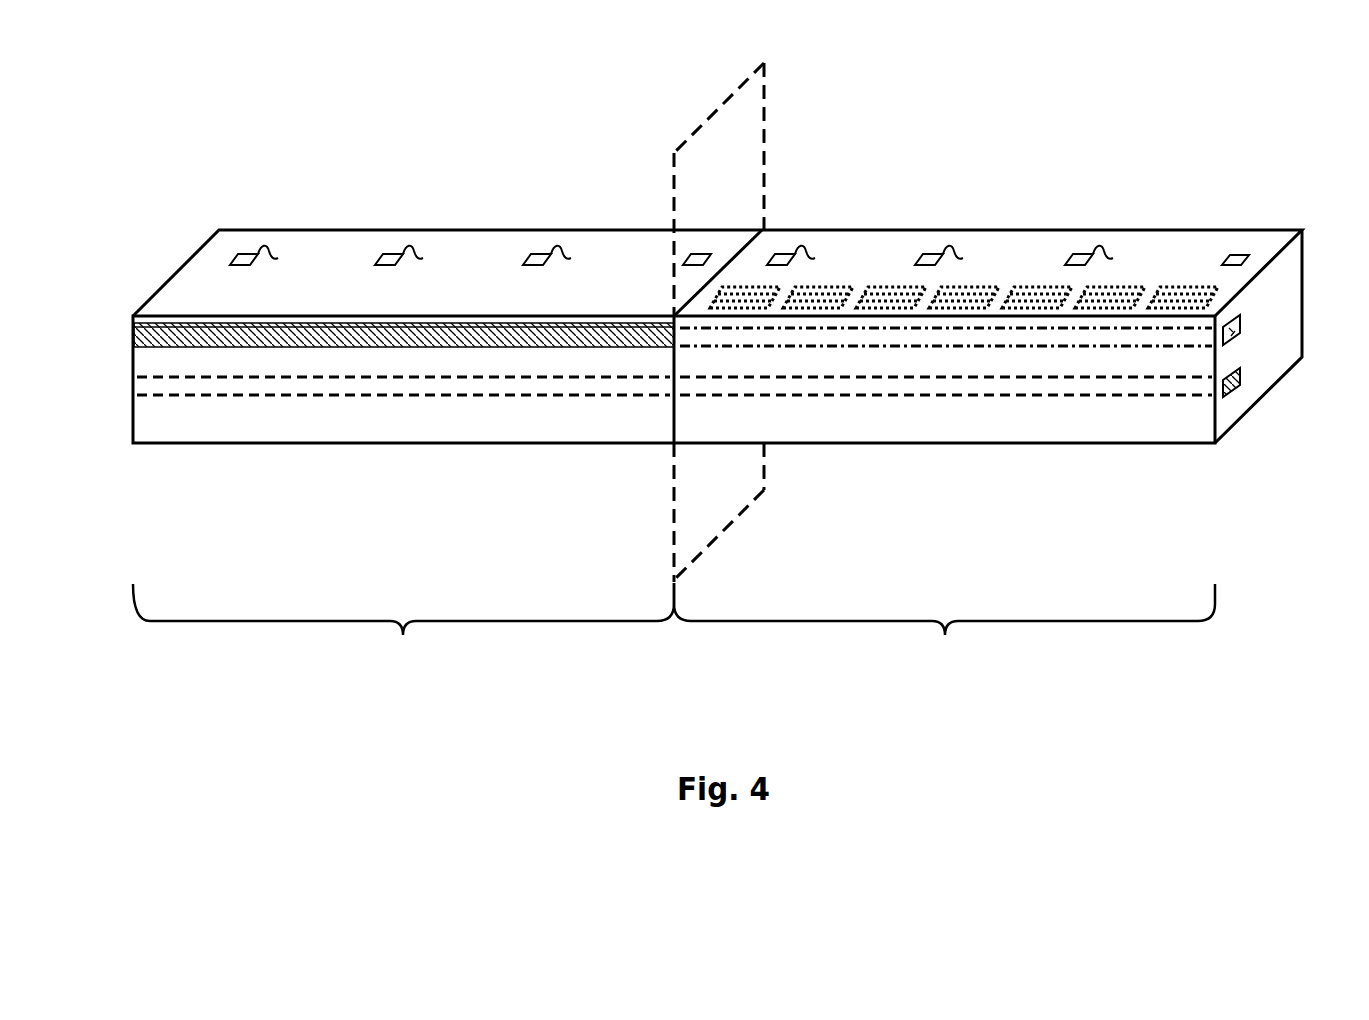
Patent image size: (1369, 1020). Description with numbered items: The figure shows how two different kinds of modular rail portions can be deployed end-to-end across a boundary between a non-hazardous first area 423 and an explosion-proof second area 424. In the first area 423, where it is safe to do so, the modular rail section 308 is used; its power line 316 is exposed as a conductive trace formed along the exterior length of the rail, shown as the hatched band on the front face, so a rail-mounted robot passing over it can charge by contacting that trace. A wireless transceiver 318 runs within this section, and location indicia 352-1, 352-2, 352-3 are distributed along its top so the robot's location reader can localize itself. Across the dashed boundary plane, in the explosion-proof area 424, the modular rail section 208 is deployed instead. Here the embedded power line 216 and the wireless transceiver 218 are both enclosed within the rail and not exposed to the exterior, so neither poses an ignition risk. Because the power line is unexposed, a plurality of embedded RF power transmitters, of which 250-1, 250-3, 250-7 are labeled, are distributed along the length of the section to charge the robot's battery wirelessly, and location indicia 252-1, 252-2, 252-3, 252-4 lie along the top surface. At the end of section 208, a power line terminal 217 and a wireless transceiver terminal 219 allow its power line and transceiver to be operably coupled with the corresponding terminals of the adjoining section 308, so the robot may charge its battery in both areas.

The modular rail section 308 is at (497, 240).
The modular rail section 208 is at (1038, 240).
The power line 316 is at (150, 348).
The wireless transceiver 318 is at (284, 396).
The wireless transceiver 218 is at (820, 396).
The embedded power line 216 is at (983, 348).
The power line terminal 217 is at (1240, 325).
The wireless transceiver terminal 219 is at (1240, 371).
The location indicium 352-1 is at (277, 259).
The location indicium 352-2 is at (426, 259).
The location indicium 352-3 is at (574, 259).
The location indicium 252-1 is at (817, 259).
The location indicium 252-2 is at (966, 259).
The location indicium 252-3 is at (1115, 259).
The location indicium 252-4 is at (1240, 255).
The RF power transmitter 250-1 is at (720, 287).
The RF power transmitter 250-3 is at (890, 287).
The RF power transmitter 250-7 is at (1190, 287).
The first area 423 is at (403, 625).
The second area 424 is at (944, 625).